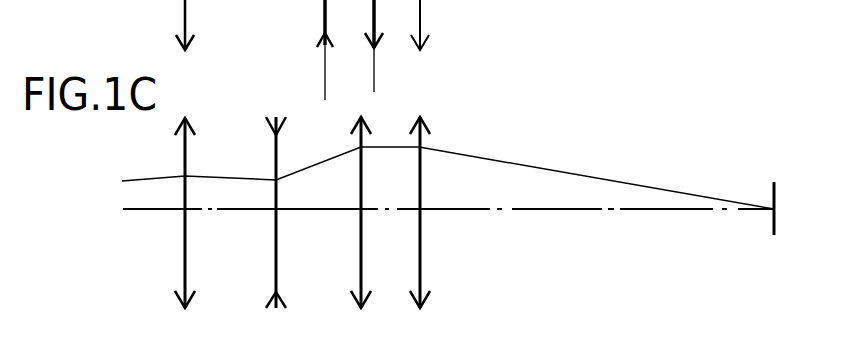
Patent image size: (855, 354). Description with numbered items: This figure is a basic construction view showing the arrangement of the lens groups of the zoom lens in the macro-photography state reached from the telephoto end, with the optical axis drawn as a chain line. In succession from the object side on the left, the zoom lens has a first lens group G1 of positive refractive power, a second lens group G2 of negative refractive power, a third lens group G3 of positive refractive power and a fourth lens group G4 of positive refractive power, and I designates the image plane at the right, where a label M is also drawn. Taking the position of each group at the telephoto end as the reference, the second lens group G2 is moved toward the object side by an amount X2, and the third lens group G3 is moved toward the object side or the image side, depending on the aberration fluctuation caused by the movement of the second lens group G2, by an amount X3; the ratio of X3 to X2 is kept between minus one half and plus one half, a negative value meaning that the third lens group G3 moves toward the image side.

The first lens group G1 is at (190, 294).
The second lens group G2 is at (280, 296).
The third lens group G3 is at (366, 294).
The fourth lens group G4 is at (425, 294).
The image plane I is at (777, 190).
The intermediate focal length position M is at (730, 163).
The amount of movement of the second lens group X2 is at (325, 85).
The amount of movement of the third lens group X3 is at (402, 88).